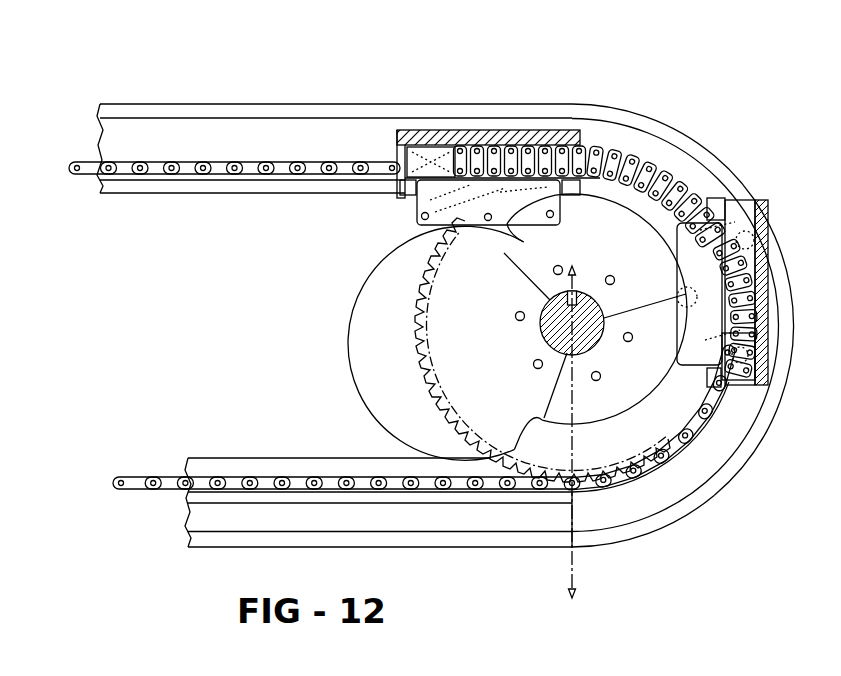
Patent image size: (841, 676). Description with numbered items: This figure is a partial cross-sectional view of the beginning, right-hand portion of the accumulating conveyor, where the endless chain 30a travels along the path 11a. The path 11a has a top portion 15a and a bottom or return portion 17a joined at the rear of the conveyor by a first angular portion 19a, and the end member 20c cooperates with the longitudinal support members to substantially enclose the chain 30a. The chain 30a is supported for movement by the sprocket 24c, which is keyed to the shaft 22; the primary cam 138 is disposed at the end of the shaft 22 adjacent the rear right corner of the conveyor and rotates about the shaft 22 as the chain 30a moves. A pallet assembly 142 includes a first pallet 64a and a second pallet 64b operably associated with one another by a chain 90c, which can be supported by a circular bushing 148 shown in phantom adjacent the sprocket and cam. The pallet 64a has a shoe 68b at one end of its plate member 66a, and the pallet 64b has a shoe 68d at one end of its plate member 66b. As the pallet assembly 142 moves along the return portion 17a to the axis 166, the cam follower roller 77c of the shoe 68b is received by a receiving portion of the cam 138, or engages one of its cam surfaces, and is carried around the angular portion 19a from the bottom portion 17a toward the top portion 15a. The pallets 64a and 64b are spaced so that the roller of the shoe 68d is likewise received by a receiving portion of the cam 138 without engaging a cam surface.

The path 11a is at (245, 95).
The top portion 15a is at (412, 98).
The bottom portion 17a is at (129, 527).
The first angular portion 19a is at (725, 513).
The end member 20c is at (766, 424).
The shaft 22 is at (541, 318).
The sprocket 24c is at (415, 320).
The endless chain 30a is at (97, 167).
The pallet 64a is at (543, 90).
The pallet 64b is at (787, 218).
The plate member 66a is at (503, 118).
The plate member 66b is at (772, 282).
The shoe 68b is at (415, 202).
The shoe 68d is at (740, 208).
The cam follower roller 77c is at (437, 263).
The chain 90c is at (665, 178).
The primary cam 138 is at (482, 365).
The pallet assembly 142 is at (677, 107).
The bushing 148 is at (460, 403).
The axis 166 is at (577, 563).